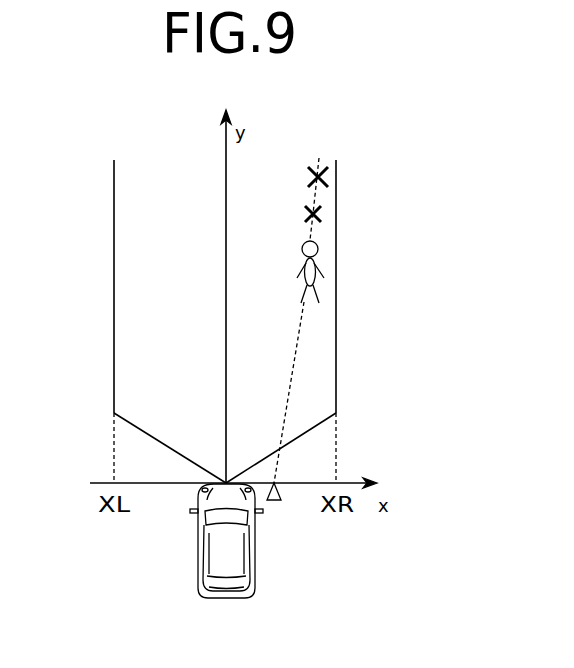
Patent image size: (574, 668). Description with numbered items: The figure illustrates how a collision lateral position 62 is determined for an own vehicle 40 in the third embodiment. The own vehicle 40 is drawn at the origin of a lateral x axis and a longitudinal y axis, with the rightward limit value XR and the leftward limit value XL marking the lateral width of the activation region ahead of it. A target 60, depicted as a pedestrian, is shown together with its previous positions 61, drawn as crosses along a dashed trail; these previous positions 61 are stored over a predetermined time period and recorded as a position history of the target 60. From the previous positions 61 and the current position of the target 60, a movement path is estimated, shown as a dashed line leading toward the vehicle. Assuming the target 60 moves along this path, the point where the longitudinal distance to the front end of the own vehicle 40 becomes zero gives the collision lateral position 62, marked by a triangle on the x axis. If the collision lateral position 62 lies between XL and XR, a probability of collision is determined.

The own vehicle 40 is at (255, 567).
The target 60 is at (318, 250).
The previous positions 61 is at (328, 181).
The collision lateral position 62 is at (282, 494).